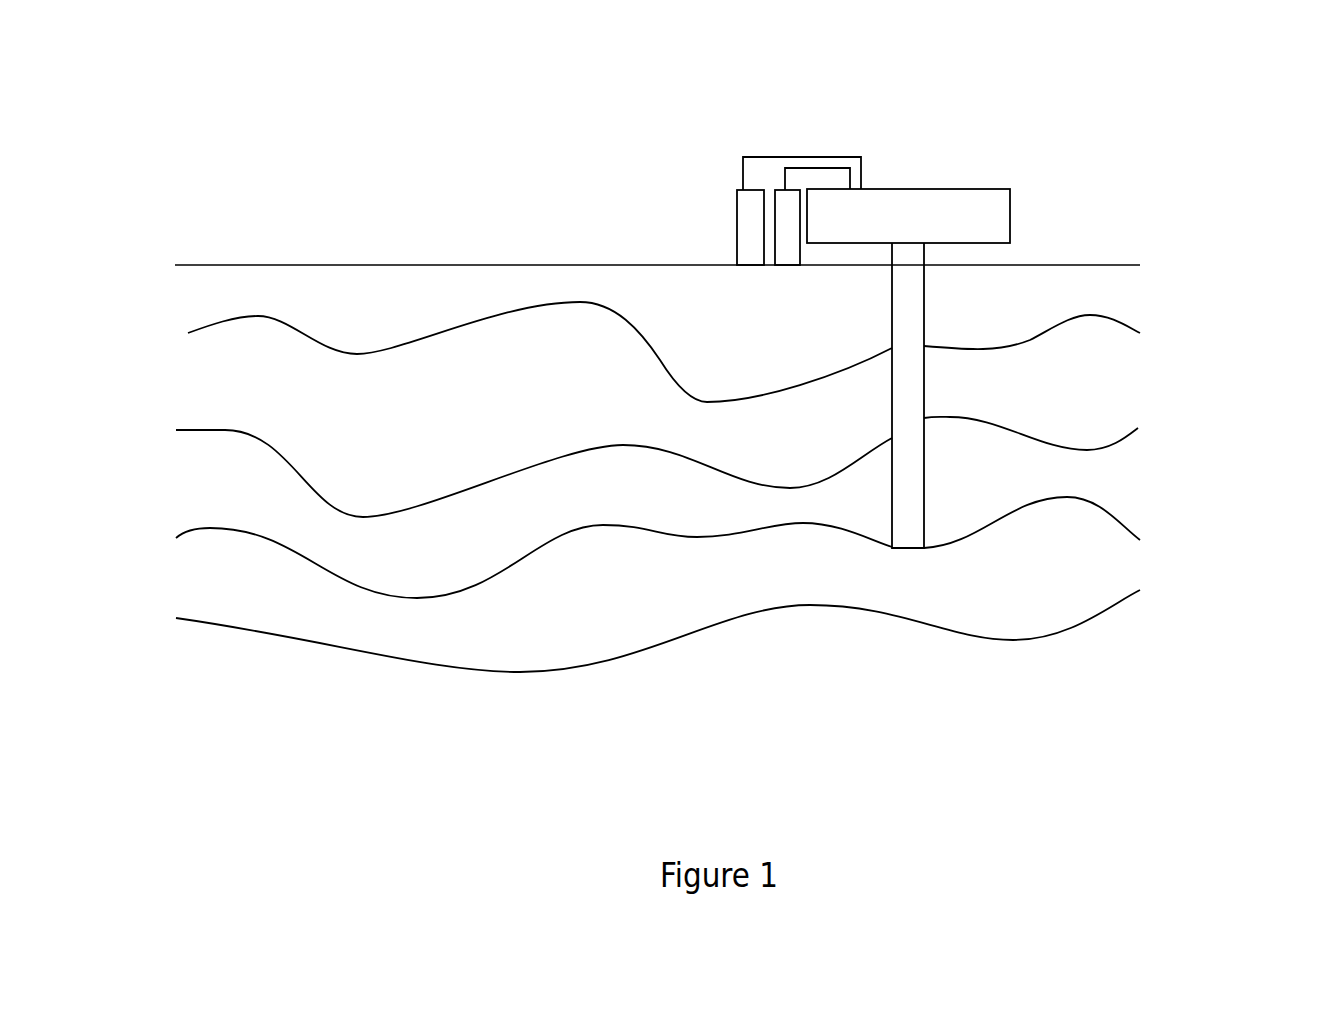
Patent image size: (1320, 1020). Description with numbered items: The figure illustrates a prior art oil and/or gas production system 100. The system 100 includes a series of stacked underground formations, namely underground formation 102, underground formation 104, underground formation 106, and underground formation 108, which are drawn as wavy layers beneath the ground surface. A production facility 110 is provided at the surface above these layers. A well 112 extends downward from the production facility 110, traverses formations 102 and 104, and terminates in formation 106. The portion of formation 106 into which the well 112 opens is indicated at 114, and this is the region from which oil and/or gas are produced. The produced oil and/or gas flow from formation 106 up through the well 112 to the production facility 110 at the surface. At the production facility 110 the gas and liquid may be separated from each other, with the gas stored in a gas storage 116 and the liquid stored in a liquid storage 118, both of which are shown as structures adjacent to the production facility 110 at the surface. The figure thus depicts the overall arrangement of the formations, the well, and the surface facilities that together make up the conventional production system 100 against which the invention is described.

The prior art system 100 is at (572, 140).
The underground formation 102 is at (664, 352).
The underground formation 104 is at (657, 446).
The underground formation 106 is at (658, 524).
The underground formation 108 is at (658, 602).
The production facility 110 is at (890, 227).
The well 112 is at (924, 293).
The portion of formation 114 is at (872, 515).
The gas storage 116 is at (785, 211).
The liquid storage 118 is at (753, 211).